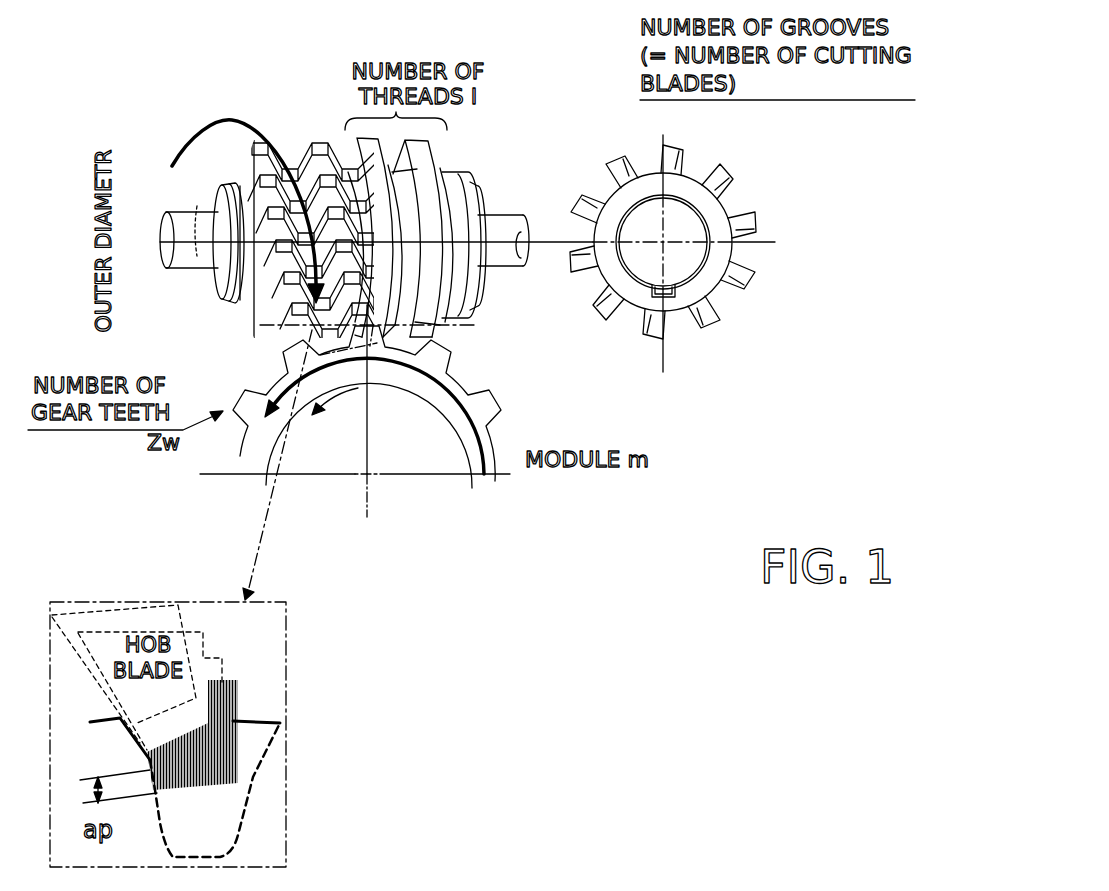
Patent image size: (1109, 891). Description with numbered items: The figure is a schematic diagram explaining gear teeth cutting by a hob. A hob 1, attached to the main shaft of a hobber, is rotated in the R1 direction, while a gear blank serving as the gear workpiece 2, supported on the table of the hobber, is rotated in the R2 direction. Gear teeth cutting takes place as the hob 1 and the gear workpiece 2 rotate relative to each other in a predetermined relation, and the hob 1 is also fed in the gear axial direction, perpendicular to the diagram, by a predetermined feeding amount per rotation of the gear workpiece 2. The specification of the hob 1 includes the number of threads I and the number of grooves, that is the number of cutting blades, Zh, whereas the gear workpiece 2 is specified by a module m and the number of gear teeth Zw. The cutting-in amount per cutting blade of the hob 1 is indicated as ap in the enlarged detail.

The hob 1 is at (318, 136).
The gear blank (gear workpiece) 2 is at (483, 362).
The rotation direction of the hob R1 is at (229, 120).
The rotation direction of the gear workpiece R2 is at (262, 378).
The number of grooves (number of cutting blades) Zh is at (703, 165).